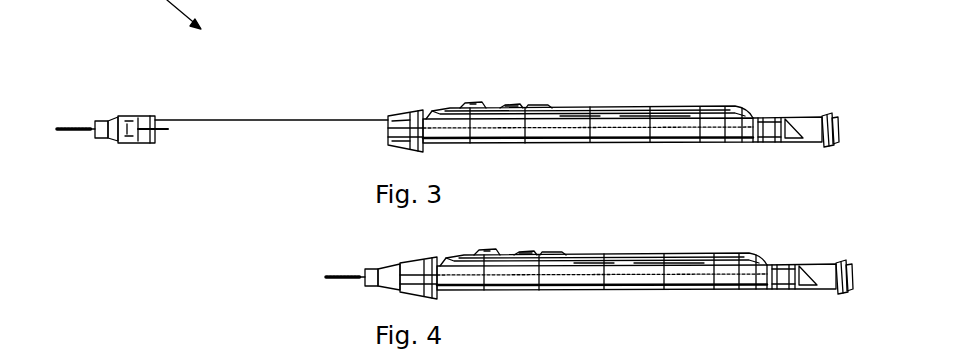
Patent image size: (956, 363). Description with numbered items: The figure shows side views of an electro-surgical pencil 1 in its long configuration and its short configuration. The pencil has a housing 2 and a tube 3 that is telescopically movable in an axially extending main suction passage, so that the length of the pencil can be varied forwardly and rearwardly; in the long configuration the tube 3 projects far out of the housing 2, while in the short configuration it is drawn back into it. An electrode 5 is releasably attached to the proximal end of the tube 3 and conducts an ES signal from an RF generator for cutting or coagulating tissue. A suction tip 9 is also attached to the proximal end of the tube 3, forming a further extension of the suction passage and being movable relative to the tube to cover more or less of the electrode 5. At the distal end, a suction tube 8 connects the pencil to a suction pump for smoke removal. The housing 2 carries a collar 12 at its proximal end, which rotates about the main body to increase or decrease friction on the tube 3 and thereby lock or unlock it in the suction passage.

In FIG. 4, the electro-surgical pencil 1 is at (314, 268).
In FIG. 3, the housing 2 is at (633, 138).
In FIG. 3, the tube 3 is at (297, 118).
In FIG. 3, the electrode 5 is at (66, 120).
In FIG. 3, the suction tube 8 is at (835, 117).
In FIG. 3, the suction tip 9 is at (143, 145).
In FIG. 3, the collar 12 is at (401, 112).